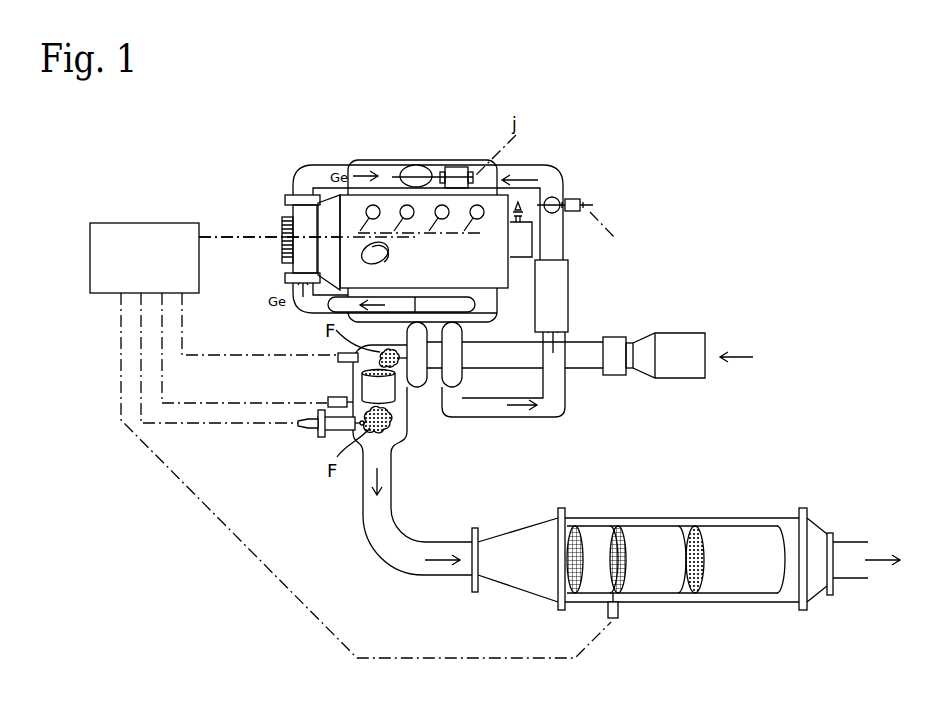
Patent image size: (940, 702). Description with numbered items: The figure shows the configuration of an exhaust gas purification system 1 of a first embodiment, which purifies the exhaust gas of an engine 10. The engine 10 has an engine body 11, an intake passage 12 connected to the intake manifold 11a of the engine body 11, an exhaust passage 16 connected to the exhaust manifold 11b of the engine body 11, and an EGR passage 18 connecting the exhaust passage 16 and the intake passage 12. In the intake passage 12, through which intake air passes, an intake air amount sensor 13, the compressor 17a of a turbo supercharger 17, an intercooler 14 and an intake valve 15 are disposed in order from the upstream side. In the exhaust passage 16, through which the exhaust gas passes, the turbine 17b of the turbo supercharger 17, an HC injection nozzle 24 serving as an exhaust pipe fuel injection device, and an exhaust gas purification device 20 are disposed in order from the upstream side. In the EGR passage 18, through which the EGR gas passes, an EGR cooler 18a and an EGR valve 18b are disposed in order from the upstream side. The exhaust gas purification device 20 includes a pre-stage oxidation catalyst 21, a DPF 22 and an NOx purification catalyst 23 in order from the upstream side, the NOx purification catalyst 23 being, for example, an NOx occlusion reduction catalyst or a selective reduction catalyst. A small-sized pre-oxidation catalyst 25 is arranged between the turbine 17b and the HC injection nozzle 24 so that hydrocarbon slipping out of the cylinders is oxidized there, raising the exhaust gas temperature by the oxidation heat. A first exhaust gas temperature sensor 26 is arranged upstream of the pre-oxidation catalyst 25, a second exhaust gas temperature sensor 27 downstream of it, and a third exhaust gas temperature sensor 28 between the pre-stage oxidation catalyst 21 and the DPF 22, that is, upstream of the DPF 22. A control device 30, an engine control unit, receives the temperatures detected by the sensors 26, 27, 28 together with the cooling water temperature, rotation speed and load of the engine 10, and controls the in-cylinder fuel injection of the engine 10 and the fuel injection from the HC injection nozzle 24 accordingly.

The exhaust gas purification system 1 is at (270, 537).
The engine 10 is at (664, 226).
The engine body 11 is at (492, 273).
The intake manifold 11a is at (371, 160).
The exhaust manifold 11b is at (497, 302).
The intake passage 12 is at (563, 240).
The intake air amount sensor 13 is at (615, 375).
The intercooler 14 is at (568, 290).
The intake valve 15 is at (575, 195).
The exhaust passage 16 is at (430, 577).
The turbo supercharger 17 is at (549, 436).
The compressor 17a is at (428, 383).
The turbine 17b is at (462, 382).
The EGR passage 18 is at (300, 165).
The EGR cooler 18a is at (283, 212).
The EGR valve 18b is at (417, 165).
The exhaust gas purification device 20 is at (782, 603).
The pre-stage oxidation catalyst 21 is at (595, 527).
The DPF 22 is at (658, 527).
The NOx purification catalyst 23 is at (735, 527).
The HC injection nozzle 24 is at (315, 432).
The pre-oxidation catalyst 25 is at (393, 398).
The first exhaust gas temperature sensor 26 is at (340, 352).
The second exhaust gas temperature sensor 27 is at (328, 398).
The third exhaust gas temperature sensor 28 is at (619, 616).
The control device 30 is at (122, 222).